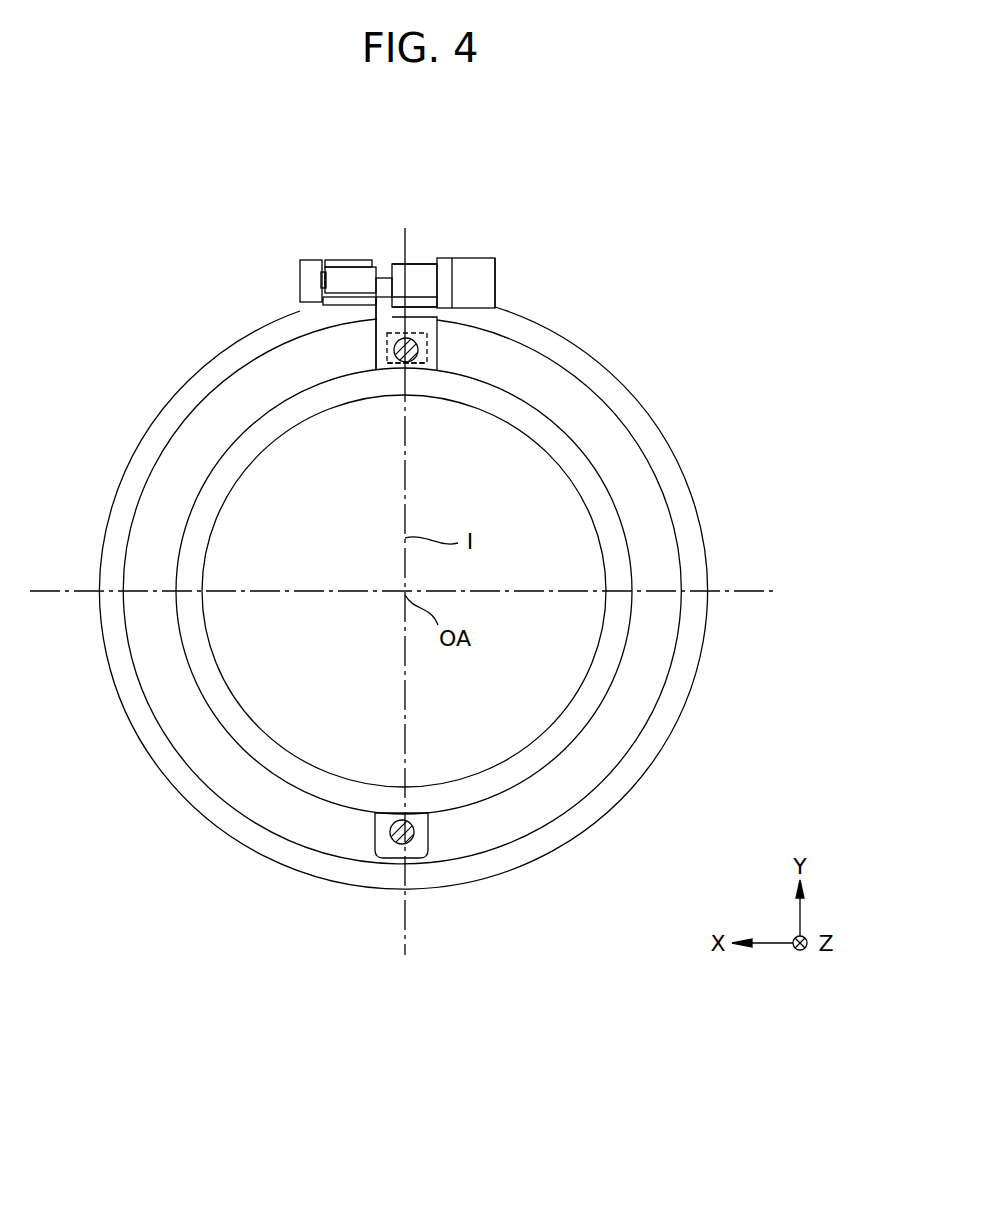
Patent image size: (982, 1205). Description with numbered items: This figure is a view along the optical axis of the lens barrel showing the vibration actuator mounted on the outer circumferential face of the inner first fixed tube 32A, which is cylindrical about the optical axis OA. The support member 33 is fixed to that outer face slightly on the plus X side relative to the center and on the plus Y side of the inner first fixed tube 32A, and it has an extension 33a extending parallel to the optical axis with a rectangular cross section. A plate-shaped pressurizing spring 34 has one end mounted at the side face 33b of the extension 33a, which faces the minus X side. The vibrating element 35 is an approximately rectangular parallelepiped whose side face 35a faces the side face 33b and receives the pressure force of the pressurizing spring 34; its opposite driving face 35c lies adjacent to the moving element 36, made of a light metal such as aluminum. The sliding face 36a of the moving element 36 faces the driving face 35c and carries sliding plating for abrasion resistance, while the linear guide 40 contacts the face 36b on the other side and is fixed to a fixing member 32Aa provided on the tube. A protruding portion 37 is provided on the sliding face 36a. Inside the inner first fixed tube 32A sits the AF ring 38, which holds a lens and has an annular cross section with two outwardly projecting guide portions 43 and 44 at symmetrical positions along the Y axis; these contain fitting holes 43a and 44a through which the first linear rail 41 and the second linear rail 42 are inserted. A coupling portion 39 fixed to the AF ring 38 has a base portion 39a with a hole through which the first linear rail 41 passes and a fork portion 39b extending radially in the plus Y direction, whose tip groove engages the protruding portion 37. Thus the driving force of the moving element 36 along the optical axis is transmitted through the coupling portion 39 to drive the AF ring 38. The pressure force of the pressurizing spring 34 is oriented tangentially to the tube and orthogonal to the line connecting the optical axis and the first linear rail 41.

The inner first fixed tube 32A is at (633, 415).
The fixing member 32Aa is at (485, 272).
The support member 33 is at (293, 244).
The extension 33a is at (303, 288).
The side face 33b is at (328, 300).
The pressurizing spring 34 is at (323, 270).
The vibrating element 35 is at (353, 277).
The side face 35a is at (323, 278).
The driving face 35c is at (418, 262).
The moving element 36 is at (428, 277).
The sliding face 36a is at (381, 278).
The face 36b is at (440, 273).
The protruding portion 37 is at (355, 295).
The AF ring 38 is at (600, 498).
The coupling portion 39 is at (480, 387).
The base portion 39a is at (437, 328).
The fork portion 39b is at (376, 295).
The linear guide 40 is at (450, 289).
The first linear rail 41 is at (401, 361).
The second linear rail 42 is at (413, 820).
The guide portion 43 is at (425, 362).
The fitting hole 43a is at (410, 360).
The guide portion 44 is at (419, 795).
The fitting hole 44a is at (412, 838).